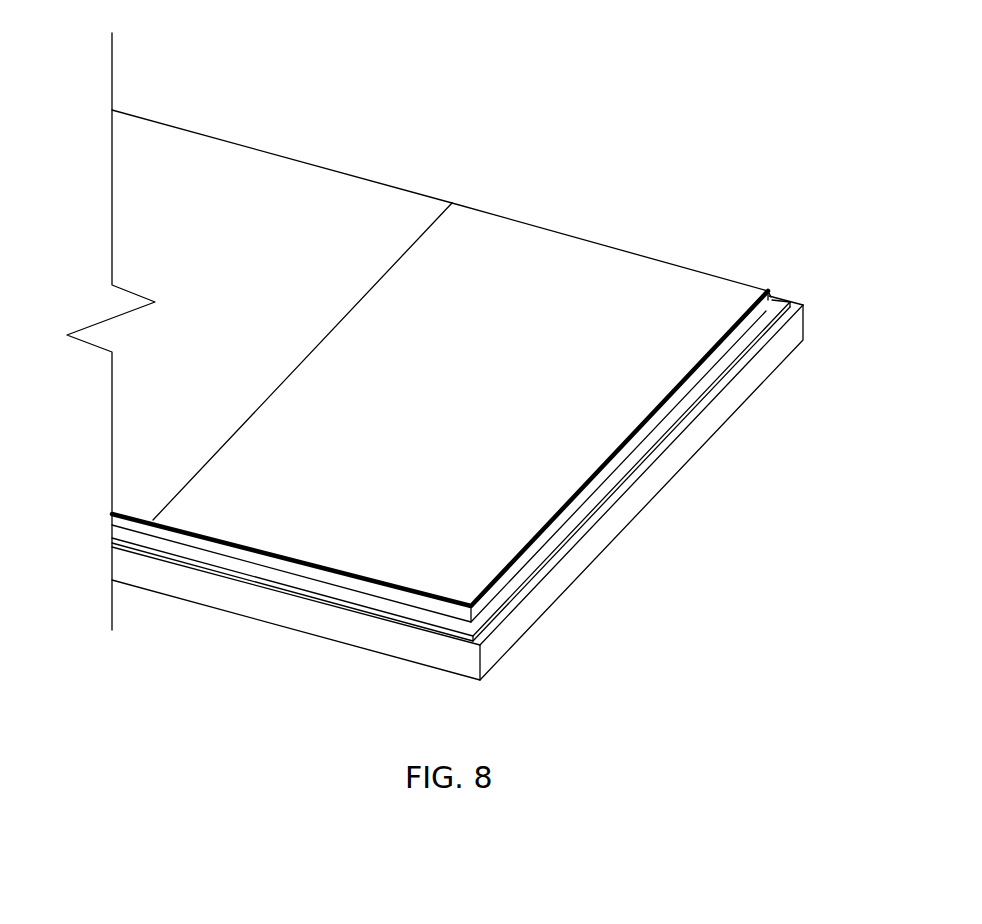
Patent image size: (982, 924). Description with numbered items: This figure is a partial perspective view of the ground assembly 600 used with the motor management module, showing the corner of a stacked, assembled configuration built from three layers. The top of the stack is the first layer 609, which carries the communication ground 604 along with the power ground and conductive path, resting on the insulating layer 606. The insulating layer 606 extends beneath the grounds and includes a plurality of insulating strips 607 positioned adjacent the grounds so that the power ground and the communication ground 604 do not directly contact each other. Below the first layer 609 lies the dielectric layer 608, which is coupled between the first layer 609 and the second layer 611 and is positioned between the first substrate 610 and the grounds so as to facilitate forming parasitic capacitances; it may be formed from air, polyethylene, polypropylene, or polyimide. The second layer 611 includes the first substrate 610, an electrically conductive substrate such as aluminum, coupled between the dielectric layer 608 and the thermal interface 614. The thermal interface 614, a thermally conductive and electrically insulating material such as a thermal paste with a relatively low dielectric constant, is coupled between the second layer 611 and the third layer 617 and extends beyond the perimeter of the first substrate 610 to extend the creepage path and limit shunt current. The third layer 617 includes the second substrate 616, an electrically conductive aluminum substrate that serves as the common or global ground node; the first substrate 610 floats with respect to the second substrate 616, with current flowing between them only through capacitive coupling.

The ground assembly 600 is at (465, 356).
The communication ground 604 is at (347, 192).
The insulating layer 606 is at (546, 198).
The insulating strip 607 is at (579, 250).
The dielectric layer 608 is at (112, 512).
The first layer 609 is at (774, 287).
The first substrate 610 is at (640, 438).
The second layer 611 is at (775, 310).
The thermal interface 614 is at (767, 313).
The second substrate 616 is at (722, 412).
The third layer 617 is at (785, 388).